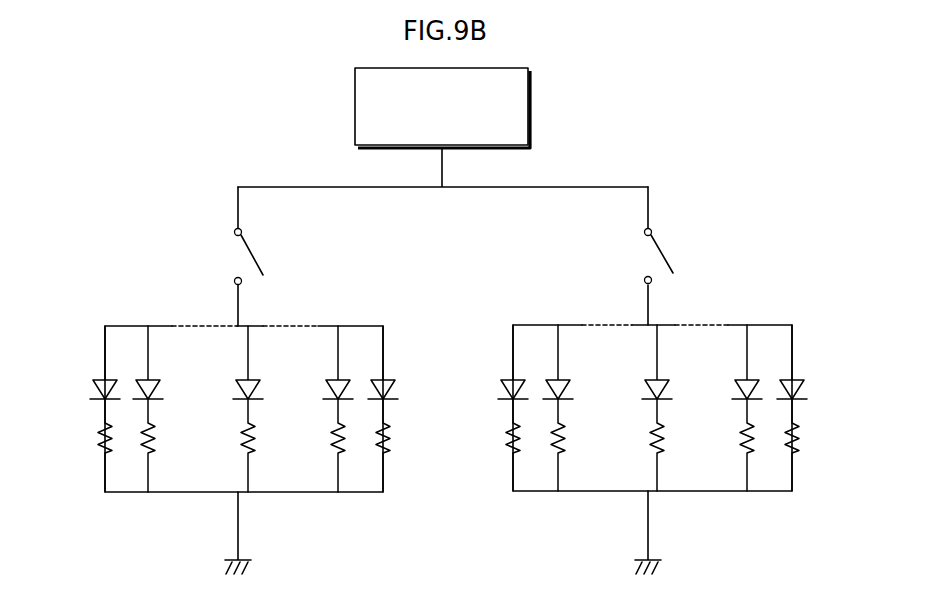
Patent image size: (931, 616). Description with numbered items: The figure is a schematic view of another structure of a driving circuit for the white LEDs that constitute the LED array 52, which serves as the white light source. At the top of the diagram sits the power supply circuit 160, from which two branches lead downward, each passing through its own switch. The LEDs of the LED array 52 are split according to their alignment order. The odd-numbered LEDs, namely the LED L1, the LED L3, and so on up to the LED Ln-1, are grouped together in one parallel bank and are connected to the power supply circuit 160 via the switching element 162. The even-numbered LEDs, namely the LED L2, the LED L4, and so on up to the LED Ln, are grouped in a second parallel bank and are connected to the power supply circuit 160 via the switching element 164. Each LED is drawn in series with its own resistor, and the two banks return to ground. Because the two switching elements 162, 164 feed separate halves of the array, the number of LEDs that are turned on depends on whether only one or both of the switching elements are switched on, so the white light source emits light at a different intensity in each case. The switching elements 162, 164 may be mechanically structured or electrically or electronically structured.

The power supply circuit 160 is at (531, 75).
The switching element 162 is at (292, 246).
The switching element 164 is at (689, 245).
The LED array 52 is at (450, 461).
The odd-numbered LED L1 is at (100, 379).
The even-numbered LED L2 is at (508, 379).
The odd-numbered LED L3 is at (152, 379).
The even-numbered LED L4 is at (565, 379).
The odd-numbered LED Ln-1 is at (392, 383).
The even-numbered LED Ln is at (800, 379).